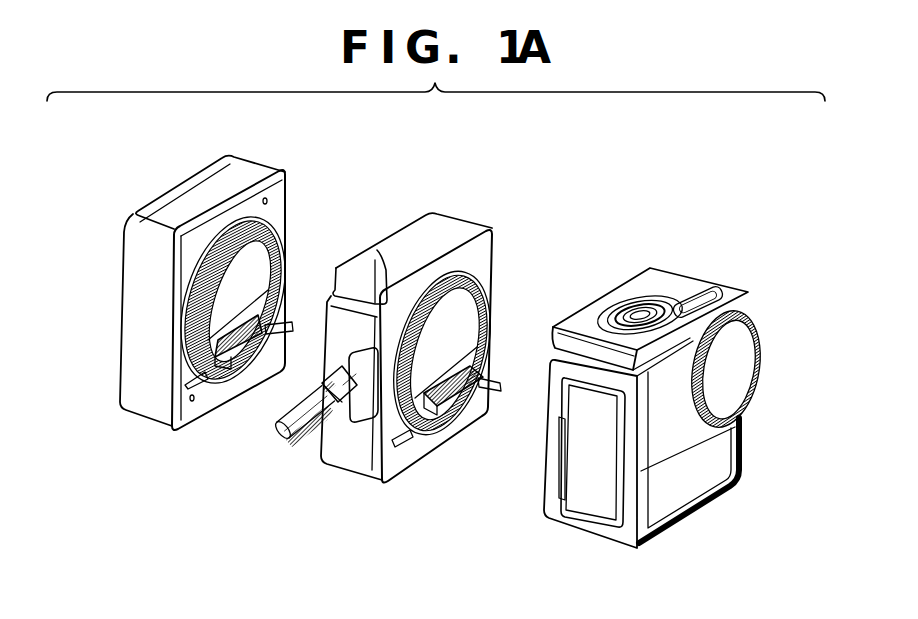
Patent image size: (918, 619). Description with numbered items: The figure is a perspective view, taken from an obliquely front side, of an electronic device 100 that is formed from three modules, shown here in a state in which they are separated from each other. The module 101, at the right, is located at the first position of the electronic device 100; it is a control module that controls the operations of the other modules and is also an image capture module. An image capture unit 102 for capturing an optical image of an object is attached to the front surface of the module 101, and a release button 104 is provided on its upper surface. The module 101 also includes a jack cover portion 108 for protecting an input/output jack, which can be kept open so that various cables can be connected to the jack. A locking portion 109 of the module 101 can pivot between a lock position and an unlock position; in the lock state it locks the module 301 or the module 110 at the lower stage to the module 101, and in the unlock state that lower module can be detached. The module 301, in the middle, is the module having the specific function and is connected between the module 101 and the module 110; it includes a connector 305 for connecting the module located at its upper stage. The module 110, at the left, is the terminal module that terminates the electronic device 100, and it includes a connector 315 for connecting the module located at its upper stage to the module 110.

The electronic device 100 is at (565, 188).
The module 101 is at (690, 276).
The image capture unit 102 is at (752, 355).
The release button 104 is at (630, 308).
The jack cover portion 108 is at (577, 493).
The locking portion 109 is at (560, 337).
The module 110 is at (287, 200).
The module 301 is at (455, 216).
The connector 305 is at (463, 402).
The connector 315 is at (258, 345).